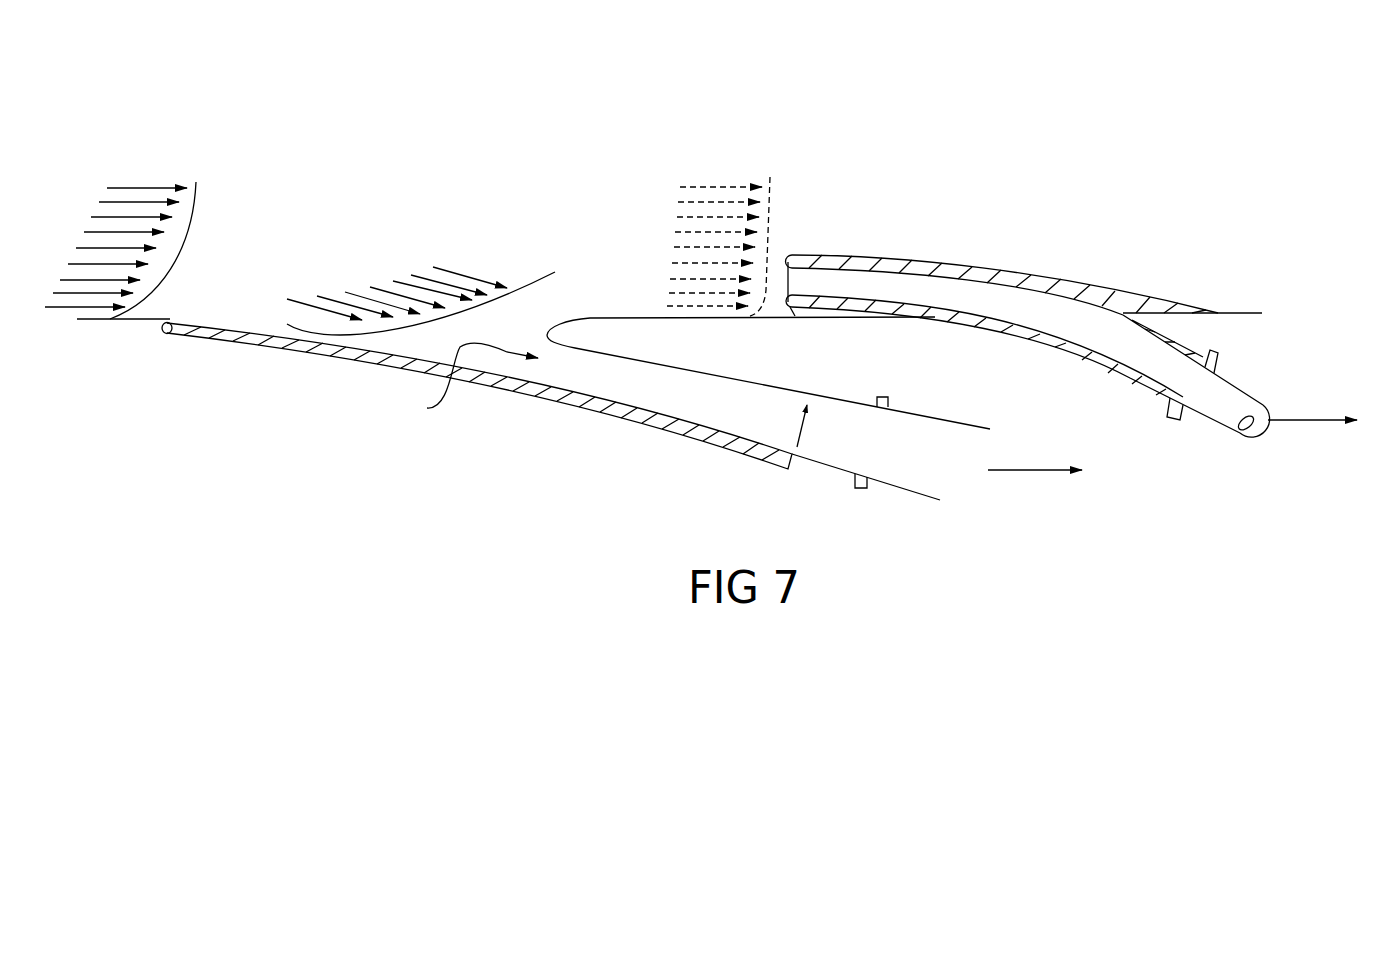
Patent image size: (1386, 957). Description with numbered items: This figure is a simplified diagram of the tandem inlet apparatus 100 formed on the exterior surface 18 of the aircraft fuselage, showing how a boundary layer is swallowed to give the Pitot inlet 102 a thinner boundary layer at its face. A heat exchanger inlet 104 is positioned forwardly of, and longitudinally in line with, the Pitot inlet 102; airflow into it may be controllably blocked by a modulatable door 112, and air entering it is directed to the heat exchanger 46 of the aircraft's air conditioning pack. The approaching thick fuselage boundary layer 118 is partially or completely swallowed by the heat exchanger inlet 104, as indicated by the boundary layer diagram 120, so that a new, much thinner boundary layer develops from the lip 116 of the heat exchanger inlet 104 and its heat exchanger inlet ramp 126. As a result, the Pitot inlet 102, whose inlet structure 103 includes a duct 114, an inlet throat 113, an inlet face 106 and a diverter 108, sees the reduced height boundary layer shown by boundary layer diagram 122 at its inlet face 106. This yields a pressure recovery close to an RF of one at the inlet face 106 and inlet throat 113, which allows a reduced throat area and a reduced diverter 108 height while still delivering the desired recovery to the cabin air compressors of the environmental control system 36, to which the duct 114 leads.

The tandem inlet apparatus 100 is at (907, 156).
The Pitot inlet 102 is at (1025, 297).
The inlet structure 103 is at (915, 263).
The heat exchanger inlet 104 is at (464, 383).
The inlet face 106 is at (787, 283).
The diverter 108 is at (817, 310).
The modulatable door 112 is at (318, 350).
The inlet throat 113 is at (797, 282).
The duct 114 is at (977, 293).
The lip 116 is at (558, 322).
The fuselage boundary layer 118 is at (137, 183).
The boundary layer diagram 120 is at (459, 270).
The boundary layer diagram 122 is at (712, 182).
The heat exchanger inlet ramp 126 is at (808, 455).
The exterior surface 18 is at (1237, 312).
The heat exchanger 46 is at (1047, 561).
The environmental control system 36 is at (1270, 519).